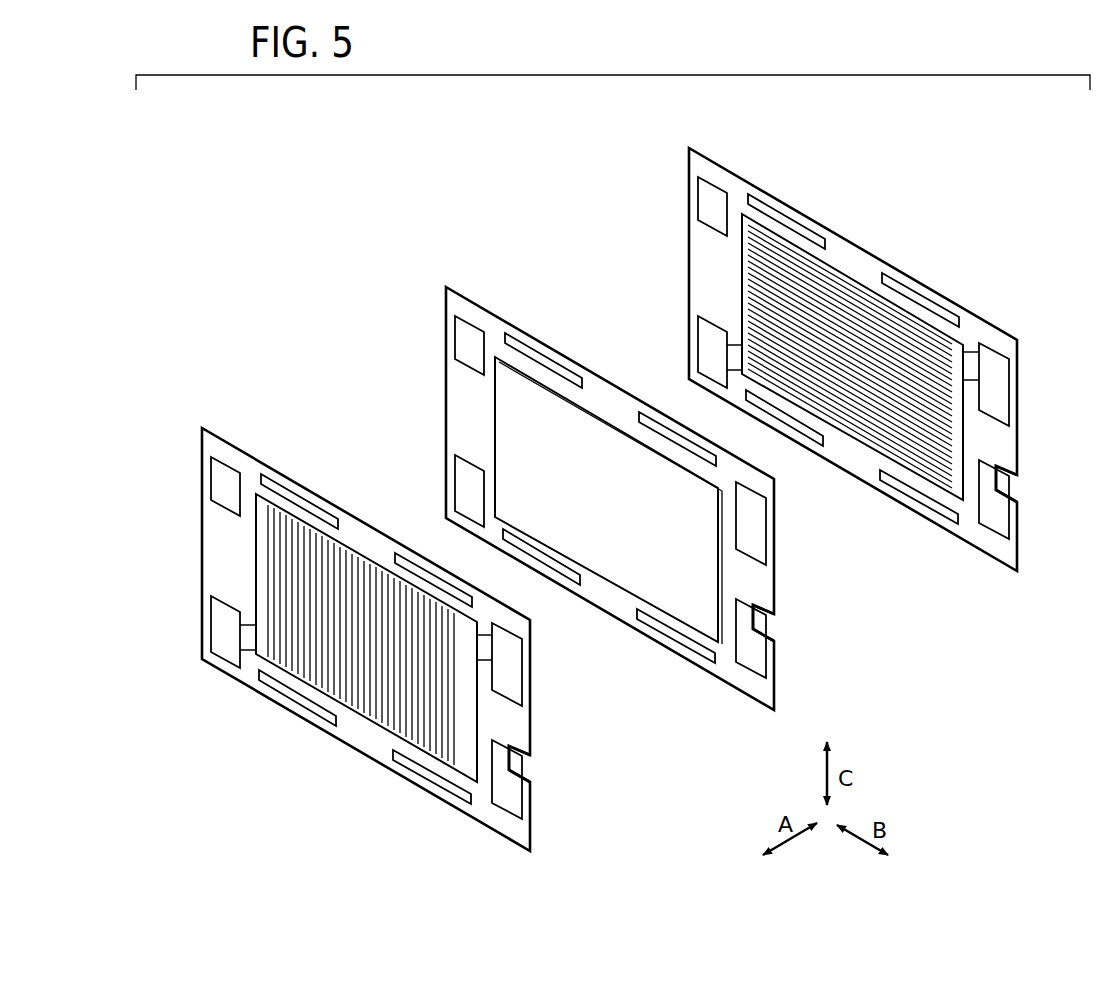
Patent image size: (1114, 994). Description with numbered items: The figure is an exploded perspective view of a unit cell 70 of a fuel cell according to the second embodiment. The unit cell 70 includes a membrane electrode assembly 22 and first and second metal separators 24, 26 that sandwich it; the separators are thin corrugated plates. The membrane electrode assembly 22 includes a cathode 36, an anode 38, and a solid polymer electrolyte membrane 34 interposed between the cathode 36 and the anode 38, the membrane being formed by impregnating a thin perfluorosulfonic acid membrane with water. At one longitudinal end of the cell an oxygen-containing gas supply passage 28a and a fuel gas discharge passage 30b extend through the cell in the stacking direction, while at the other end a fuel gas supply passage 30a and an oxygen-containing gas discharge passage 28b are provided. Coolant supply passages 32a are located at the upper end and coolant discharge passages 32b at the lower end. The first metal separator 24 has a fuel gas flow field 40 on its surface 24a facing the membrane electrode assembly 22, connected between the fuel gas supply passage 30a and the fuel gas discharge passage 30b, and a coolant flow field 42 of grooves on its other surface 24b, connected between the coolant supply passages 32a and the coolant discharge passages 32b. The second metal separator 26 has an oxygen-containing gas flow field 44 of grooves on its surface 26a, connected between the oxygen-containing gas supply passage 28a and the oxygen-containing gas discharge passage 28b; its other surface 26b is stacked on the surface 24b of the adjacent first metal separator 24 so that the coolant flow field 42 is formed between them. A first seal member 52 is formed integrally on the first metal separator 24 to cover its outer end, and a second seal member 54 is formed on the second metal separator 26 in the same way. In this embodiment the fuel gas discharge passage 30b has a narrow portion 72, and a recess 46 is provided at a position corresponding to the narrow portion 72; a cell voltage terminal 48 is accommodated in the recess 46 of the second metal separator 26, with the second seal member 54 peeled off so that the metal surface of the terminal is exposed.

The unit cell 70 is at (296, 284).
The membrane electrode assembly 22 is at (443, 285).
The first metal separator 24 is at (199, 426).
The second metal separator 26 is at (686, 146).
The surface of first metal separator 24a is at (228, 556).
The surface of first metal separator 24b is at (212, 583).
The surface of second metal separator 26a is at (713, 257).
The other surface of second metal separator 26b is at (712, 278).
The oxygen-containing gas supply passage 28a is at (515, 652).
The oxygen-containing gas discharge passage 28b is at (218, 628).
The fuel gas supply passage 30a is at (215, 468).
The fuel gas discharge passage 30b is at (510, 815).
The coolant supply passages 32a is at (290, 490).
The coolant discharge passages 32b is at (292, 696).
The solid polymer electrolyte membrane 34 is at (752, 700).
The cathode 36 is at (630, 568).
The anode 38 is at (590, 443).
The fuel gas flow field 40 is at (460, 713).
The coolant flow field 42 is at (355, 688).
The oxygen-containing gas flow field 44 is at (832, 303).
The recess 46 is at (520, 768).
The cell voltage terminal 48 is at (1015, 488).
The first seal member 52 is at (507, 840).
The second seal member 54 is at (993, 558).
The narrow portion 72 is at (742, 620).